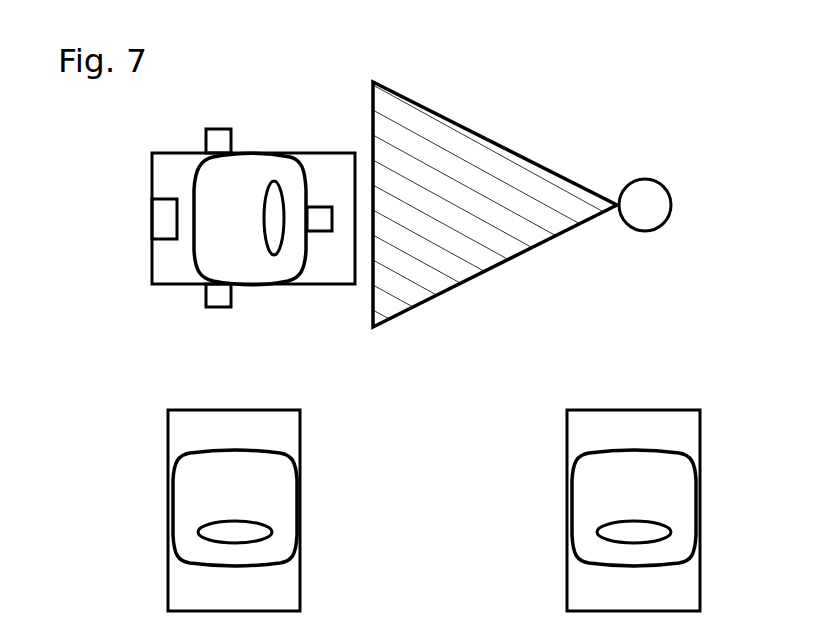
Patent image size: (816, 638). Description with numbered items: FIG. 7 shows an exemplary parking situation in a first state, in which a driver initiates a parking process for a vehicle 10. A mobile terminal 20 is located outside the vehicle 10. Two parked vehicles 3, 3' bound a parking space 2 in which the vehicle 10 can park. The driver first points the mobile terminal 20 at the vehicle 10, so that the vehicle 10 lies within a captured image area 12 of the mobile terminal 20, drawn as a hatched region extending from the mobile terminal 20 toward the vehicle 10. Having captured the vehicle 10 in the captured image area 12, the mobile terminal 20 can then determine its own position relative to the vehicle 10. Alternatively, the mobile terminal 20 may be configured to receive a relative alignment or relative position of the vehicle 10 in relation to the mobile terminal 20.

The vehicle 10 is at (140, 195).
The captured image area 12 is at (419, 207).
The mobile terminal 20 is at (645, 170).
The parked vehicle 3 is at (225, 472).
The parked vehicle 3' is at (652, 474).
The parking space 2 is at (430, 446).